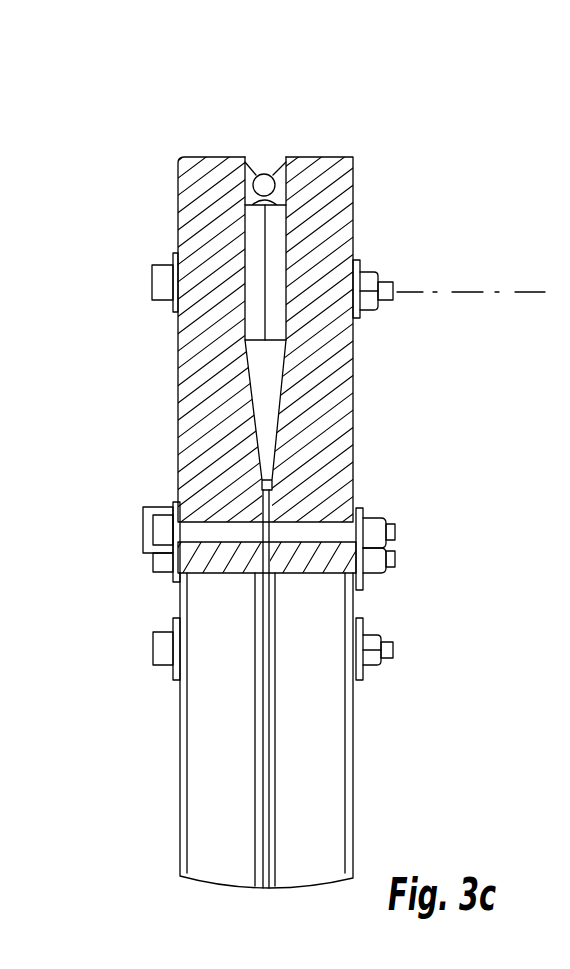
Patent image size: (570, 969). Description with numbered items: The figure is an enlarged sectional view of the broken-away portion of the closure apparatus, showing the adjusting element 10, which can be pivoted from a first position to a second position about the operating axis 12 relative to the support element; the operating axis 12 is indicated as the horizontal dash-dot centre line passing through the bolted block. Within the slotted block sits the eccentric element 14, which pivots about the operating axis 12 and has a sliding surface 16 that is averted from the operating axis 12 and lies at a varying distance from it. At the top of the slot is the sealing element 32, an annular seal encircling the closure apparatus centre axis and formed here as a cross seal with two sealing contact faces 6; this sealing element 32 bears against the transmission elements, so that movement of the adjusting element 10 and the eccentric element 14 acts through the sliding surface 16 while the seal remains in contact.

The adjusting element 10 is at (163, 282).
The sealing contact face 6 is at (252, 163).
The sealing element 32 is at (253, 165).
The sliding surface 16 is at (267, 212).
The eccentric element 14 is at (278, 244).
The operating axis 12 is at (465, 295).